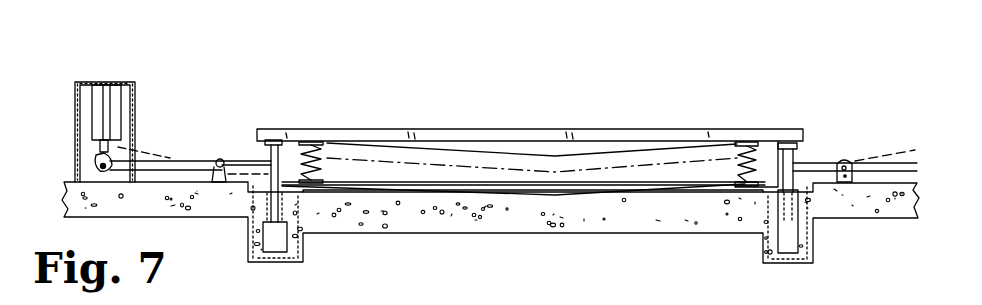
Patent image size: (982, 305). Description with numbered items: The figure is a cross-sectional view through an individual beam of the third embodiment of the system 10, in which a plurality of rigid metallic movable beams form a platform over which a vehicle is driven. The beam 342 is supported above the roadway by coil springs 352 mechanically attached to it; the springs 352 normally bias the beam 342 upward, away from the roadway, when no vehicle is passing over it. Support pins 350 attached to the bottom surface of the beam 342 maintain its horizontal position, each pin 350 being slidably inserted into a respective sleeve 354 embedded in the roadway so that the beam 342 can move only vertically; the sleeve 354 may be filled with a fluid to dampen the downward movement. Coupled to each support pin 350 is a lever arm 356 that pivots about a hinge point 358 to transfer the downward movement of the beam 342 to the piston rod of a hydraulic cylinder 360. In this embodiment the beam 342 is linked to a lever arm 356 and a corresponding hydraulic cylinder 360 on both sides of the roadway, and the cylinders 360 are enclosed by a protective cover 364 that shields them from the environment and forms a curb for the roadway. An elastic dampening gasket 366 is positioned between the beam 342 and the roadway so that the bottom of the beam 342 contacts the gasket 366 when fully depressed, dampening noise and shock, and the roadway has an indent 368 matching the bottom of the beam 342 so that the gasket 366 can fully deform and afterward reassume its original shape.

The system 10 is at (425, 68).
The movable beam 342 is at (788, 160).
The support pin 350 is at (795, 160).
The coil spring 352 is at (757, 145).
The sleeve 354 is at (248, 227).
The lever arm 356 is at (183, 163).
The hinge point 358 is at (222, 160).
The hydraulic cylinder 360 is at (115, 105).
The protective cover 364 is at (110, 83).
The dampening gasket 366 is at (625, 185).
The indent 368 is at (517, 195).